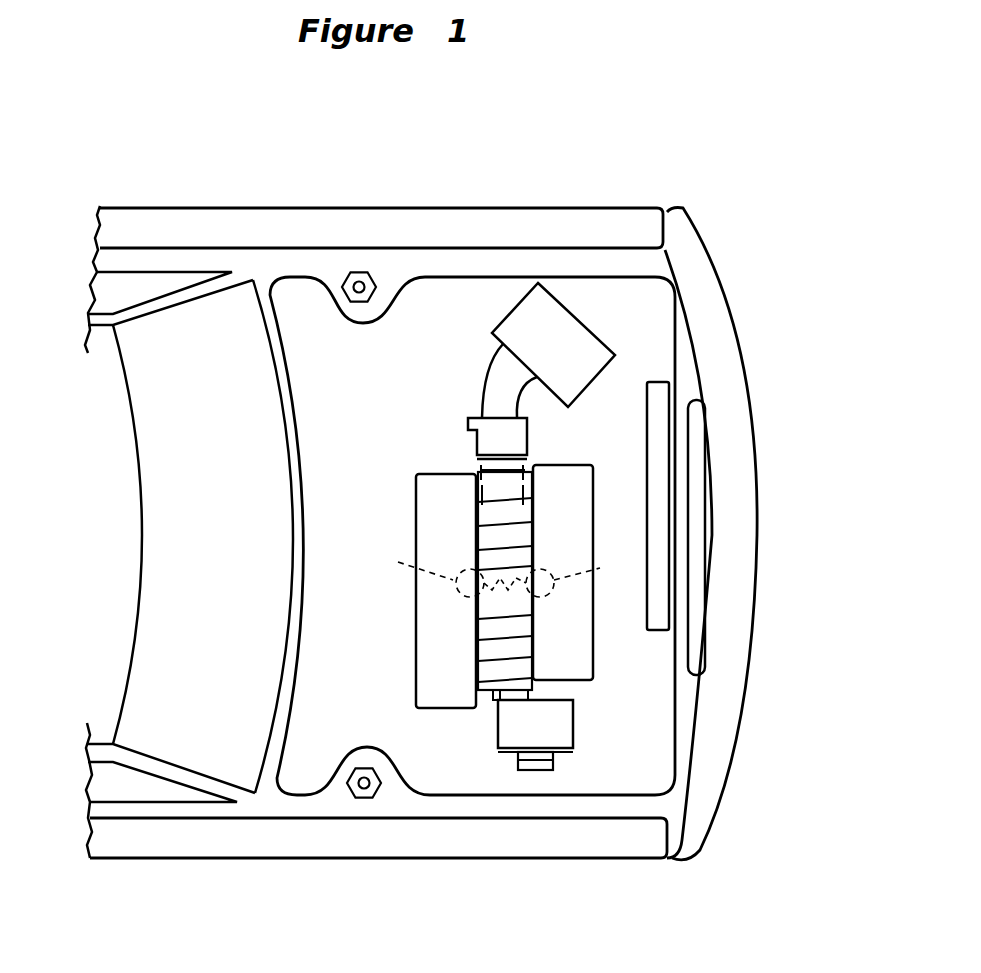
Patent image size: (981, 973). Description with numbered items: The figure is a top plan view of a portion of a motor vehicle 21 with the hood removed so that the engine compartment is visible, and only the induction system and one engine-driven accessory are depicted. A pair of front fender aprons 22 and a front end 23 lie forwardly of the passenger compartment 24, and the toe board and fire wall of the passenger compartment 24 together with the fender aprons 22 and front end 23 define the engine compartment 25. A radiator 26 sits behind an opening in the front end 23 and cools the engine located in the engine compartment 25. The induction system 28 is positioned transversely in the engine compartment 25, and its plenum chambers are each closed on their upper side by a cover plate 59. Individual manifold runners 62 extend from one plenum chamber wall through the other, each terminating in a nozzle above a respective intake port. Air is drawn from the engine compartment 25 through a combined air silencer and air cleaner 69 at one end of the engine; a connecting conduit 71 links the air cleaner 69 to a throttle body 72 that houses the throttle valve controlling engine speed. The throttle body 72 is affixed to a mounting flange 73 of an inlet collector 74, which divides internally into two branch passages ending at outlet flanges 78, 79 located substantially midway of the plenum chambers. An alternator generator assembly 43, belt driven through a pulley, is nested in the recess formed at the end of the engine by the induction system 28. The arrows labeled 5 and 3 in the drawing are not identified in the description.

The motor vehicle 21 is at (403, 178).
The front fender apron 22 is at (293, 207).
The front end 23 is at (687, 365).
The passenger compartment 24 is at (160, 788).
The engine compartment 25 is at (657, 725).
The radiator 26 is at (658, 477).
The apparatus 5 is at (765, 603).
The combined air silencer and air cleaner 69 is at (577, 345).
The connecting conduit 71 is at (502, 380).
The throttle body 72 is at (487, 437).
The mounting flange 73 is at (527, 450).
The inlet collector 74 is at (487, 470).
The induction system 28 is at (402, 647).
The cover plate 59 is at (417, 615).
The manifold runner 62 is at (482, 500).
The outlet flange 78 is at (444, 567).
The outlet flange 79 is at (578, 576).
The alternator generator assembly 43 is at (562, 733).
The base 3 is at (548, 800).